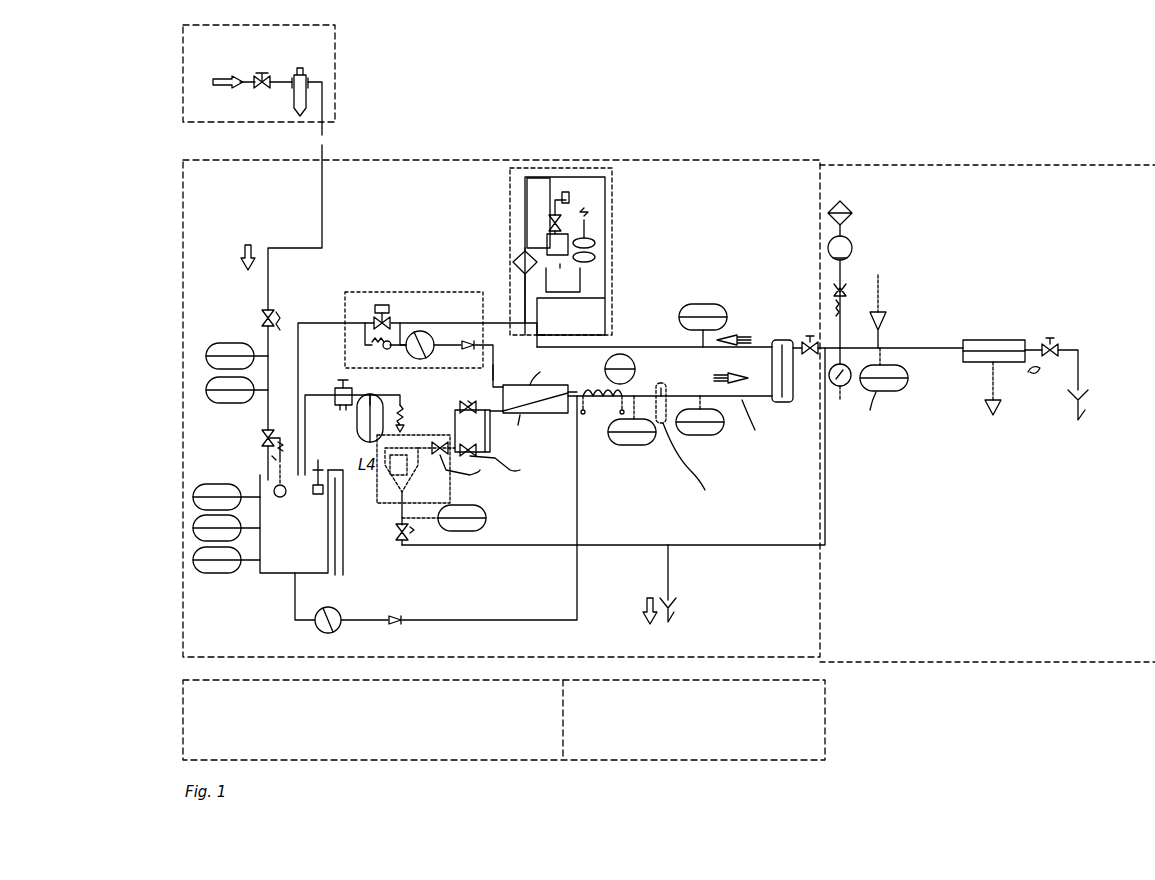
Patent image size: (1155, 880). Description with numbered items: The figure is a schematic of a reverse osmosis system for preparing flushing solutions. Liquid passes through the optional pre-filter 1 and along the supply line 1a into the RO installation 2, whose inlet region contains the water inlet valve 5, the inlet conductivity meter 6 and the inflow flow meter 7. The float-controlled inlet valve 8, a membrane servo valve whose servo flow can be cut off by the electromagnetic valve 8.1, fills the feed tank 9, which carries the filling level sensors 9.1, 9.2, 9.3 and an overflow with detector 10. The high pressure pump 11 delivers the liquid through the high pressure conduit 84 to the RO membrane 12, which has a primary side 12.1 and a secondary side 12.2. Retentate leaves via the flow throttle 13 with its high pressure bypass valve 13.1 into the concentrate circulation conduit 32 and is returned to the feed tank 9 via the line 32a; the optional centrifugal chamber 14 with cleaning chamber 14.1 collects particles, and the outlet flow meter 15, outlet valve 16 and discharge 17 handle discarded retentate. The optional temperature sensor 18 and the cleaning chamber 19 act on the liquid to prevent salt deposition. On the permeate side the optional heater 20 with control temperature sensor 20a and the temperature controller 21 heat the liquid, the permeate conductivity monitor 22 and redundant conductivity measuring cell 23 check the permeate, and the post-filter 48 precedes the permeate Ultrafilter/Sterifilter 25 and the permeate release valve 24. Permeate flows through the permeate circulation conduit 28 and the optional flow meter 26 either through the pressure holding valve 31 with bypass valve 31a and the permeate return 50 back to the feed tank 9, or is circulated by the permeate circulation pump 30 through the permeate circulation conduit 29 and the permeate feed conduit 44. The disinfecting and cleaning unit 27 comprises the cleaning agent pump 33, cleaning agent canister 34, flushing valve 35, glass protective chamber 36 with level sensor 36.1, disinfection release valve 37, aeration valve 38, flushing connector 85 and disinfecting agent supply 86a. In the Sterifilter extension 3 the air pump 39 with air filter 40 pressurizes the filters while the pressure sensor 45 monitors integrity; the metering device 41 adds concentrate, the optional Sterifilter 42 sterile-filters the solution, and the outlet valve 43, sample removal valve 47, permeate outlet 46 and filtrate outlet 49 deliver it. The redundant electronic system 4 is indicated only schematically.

The pre-filter 1 is at (337, 62).
The supply line 1a is at (322, 212).
The RO installation 2 is at (548, 160).
The Sterifilter extension 3 is at (985, 165).
The redundant electronic system 4 is at (548, 768).
The water inlet valve 5 is at (262, 310).
The inlet conductivity meter 6 is at (216, 343).
The inflow flow meter 7 is at (205, 404).
The float-controlled inlet valve 8 is at (258, 432).
The electromagnetic valve 8.1 is at (262, 459).
The feed tank 9 is at (262, 578).
The filling level sensor 9.1 is at (209, 560).
The filling level sensor 9.2 is at (209, 527).
The filling level sensor 9.3 is at (209, 497).
The overflow with detector 10 is at (344, 540).
The high pressure pump 11 is at (336, 608).
The RO membrane 12 is at (548, 430).
The primary side 12.1 is at (524, 432).
The secondary side 12.2 is at (550, 370).
The flow throttle 13 is at (460, 400).
The high pressure bypass valve 13.1 is at (506, 463).
The centrifugal chamber 14 is at (382, 505).
The cleaning chamber 14.1 is at (465, 462).
The outlet flow meter 15 is at (486, 515).
The outlet valve 16 is at (404, 552).
The discharge 17 is at (672, 592).
The temperature sensor 18 is at (355, 428).
The cleaning chamber 19 is at (336, 385).
The heater 20 is at (600, 404).
The control temperature sensor 20a is at (636, 369).
The temperature controller 21 is at (648, 445).
The permeate conductivity monitor 22 is at (712, 436).
The redundant conductivity measuring cell 23 is at (884, 394).
The permeate release valve 24 is at (805, 336).
The permeate Ultrafilter/Sterifilter 25 is at (785, 404).
The flow meter 26 is at (700, 303).
The disinfecting and cleaning unit 27 is at (616, 212).
The permeate circulation conduit 28 is at (640, 345).
The permeate circulation conduit 29 is at (496, 368).
The permeate circulation pump 30 is at (412, 358).
The pressure holding valve 31 is at (376, 312).
The bypass valve 31a is at (388, 305).
The concentrate circulation conduit 32 is at (308, 405).
The line 32a is at (478, 548).
The cleaning agent pump 33 is at (510, 260).
The cleaning agent canister 34 is at (580, 285).
The flushing valve 35 is at (600, 183).
The glass protective chamber 36 is at (548, 225).
The filling level sensor 36.1 is at (595, 250).
The disinfection release valve 37 is at (535, 200).
The aeration valve 38 is at (568, 246).
The air pump 39 is at (852, 252).
The air filter 40 is at (855, 208).
The metering device 41 is at (882, 298).
The Sterifilter 42 is at (995, 340).
The outlet valve 43 is at (1058, 340).
The permeate feed conduit 44 is at (754, 422).
The pressure sensor 45 is at (838, 366).
The permeate outlet 46 is at (1095, 395).
The sample removal valve 47 is at (1035, 380).
The post-filter 48 is at (691, 445).
The filtrate outlet 49 is at (983, 418).
The permeate return 50 is at (298, 322).
The high pressure conduit 84 is at (505, 620).
The flushing connector 85 is at (545, 330).
The disinfecting agent supply 86a is at (510, 310).